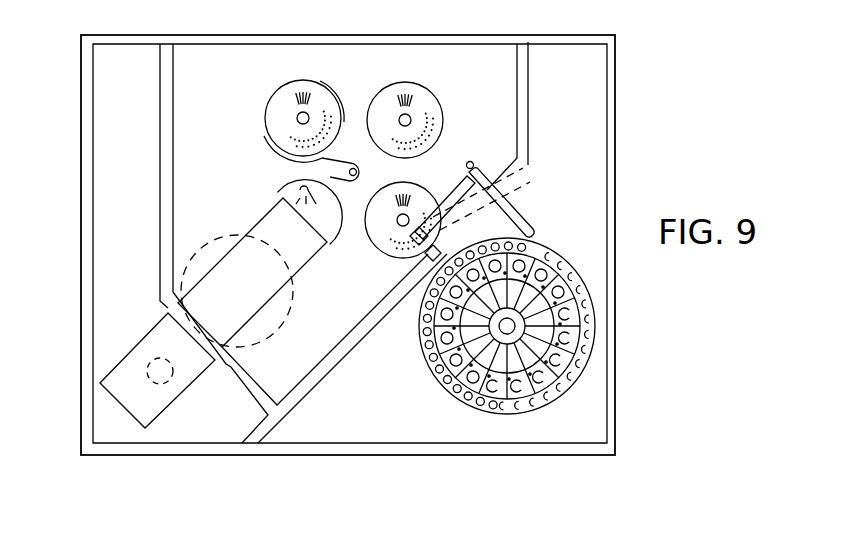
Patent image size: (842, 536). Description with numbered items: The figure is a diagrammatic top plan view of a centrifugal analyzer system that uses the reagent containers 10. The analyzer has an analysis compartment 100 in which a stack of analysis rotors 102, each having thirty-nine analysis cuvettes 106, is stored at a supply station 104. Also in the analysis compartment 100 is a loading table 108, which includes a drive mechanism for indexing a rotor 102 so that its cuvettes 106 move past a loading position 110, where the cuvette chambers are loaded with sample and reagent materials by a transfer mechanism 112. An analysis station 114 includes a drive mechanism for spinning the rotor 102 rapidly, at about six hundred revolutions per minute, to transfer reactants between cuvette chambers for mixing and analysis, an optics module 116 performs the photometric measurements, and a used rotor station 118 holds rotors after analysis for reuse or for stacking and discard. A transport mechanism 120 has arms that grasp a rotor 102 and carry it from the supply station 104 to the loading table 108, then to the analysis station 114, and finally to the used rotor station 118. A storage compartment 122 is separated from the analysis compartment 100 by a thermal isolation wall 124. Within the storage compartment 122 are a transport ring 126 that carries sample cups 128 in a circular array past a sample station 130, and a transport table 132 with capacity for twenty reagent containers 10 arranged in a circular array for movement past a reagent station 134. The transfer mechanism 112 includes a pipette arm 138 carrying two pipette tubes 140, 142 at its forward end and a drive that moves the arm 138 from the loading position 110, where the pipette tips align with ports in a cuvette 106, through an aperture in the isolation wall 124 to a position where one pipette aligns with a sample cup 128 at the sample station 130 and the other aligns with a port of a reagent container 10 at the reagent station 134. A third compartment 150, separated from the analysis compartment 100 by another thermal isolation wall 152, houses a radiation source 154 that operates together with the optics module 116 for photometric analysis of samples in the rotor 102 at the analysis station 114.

The reagent container 10 is at (549, 290).
The analysis compartment 100 is at (222, 101).
The analysis rotor 102 is at (278, 98).
The supply station 104 is at (372, 93).
The analysis cuvette 106 is at (410, 85).
The loading table 108 is at (368, 243).
The loading position 110 is at (413, 241).
The transfer mechanism 112 is at (480, 160).
The analysis station 114 is at (266, 200).
The optics module 116 is at (254, 238).
The used rotor station 118 is at (266, 102).
The transport mechanism 120 is at (334, 168).
The storage compartment 122 is at (357, 405).
The thermal isolation wall 124 is at (325, 365).
The transport ring 126 is at (440, 390).
The sample cup 128 is at (553, 262).
The sample station 130 is at (465, 262).
The transport table 132 is at (557, 381).
The reagent station 134 is at (467, 262).
The pipette arm 138 is at (455, 194).
The pipette tube 140 is at (515, 170).
The pipette tube 142 is at (533, 182).
The third compartment 150 is at (185, 404).
The thermal isolation wall 152 is at (164, 209).
The radiation source 154 is at (151, 344).